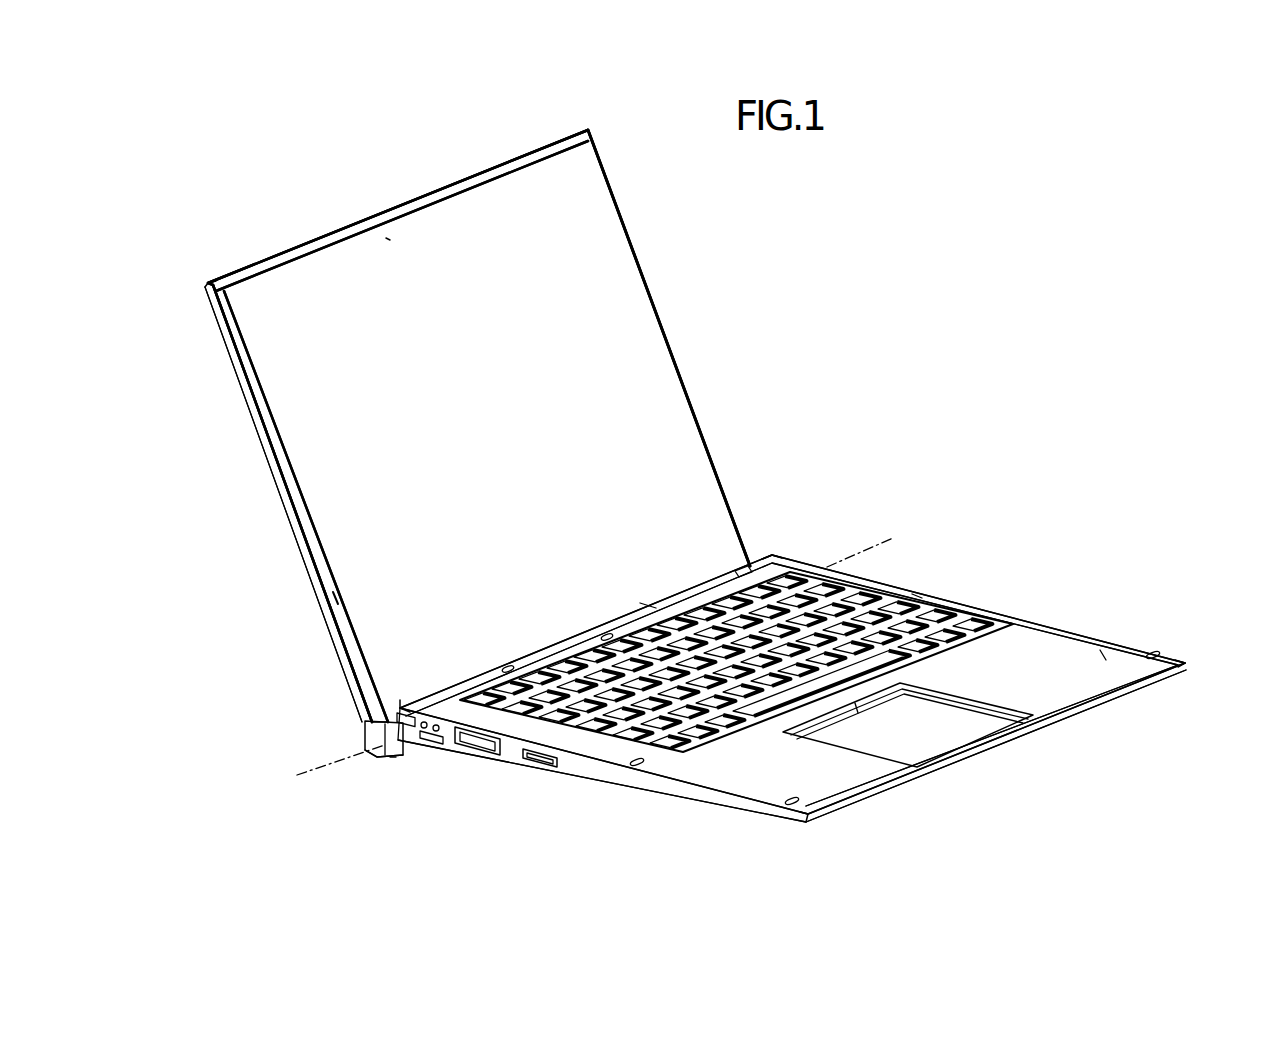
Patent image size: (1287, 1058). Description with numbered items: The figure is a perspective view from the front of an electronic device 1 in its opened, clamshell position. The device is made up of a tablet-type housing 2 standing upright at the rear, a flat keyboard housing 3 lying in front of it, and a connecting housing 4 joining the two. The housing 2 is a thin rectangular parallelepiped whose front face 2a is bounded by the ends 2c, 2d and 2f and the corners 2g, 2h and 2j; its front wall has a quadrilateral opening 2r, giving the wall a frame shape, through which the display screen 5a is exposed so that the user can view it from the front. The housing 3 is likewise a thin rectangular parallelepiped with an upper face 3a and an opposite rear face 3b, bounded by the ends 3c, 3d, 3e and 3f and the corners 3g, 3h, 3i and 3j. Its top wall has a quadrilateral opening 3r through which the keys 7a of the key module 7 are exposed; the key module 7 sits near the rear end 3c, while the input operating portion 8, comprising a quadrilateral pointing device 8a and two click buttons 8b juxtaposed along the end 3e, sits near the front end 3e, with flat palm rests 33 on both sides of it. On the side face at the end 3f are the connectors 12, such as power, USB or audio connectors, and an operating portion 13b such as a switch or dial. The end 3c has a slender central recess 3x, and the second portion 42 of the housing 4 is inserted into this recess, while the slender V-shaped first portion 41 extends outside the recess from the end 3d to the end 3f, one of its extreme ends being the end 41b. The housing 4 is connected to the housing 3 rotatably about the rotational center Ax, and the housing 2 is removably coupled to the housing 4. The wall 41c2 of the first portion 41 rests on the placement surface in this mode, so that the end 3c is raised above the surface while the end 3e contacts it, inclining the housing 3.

The electronic device 1 is at (452, 130).
The housing 2 is at (598, 133).
The face 2a is at (293, 250).
The end 2c is at (522, 128).
The end 2d is at (673, 338).
The end 2f is at (298, 540).
The corner 2g is at (205, 281).
The corner 2h is at (589, 131).
The corner 2j is at (370, 727).
The opening 2r is at (342, 600).
The display screen 5a is at (388, 238).
The housing 3 is at (1180, 658).
The face 3a is at (1087, 685).
The face 3b is at (583, 782).
The end 3c is at (763, 577).
The end 3d is at (973, 608).
The end 3e is at (1060, 717).
The end 3f is at (665, 782).
The corner 3g is at (402, 710).
The corner 3h is at (780, 563).
The corner 3i is at (1188, 666).
The corner 3j is at (808, 826).
The opening 3r is at (917, 597).
The recess 3x is at (733, 573).
The palm rests 33 is at (1103, 655).
The housing 4 is at (393, 760).
The first portion 41 is at (378, 757).
The end 41b is at (430, 737).
The wall 41c2 is at (393, 760).
The second portion 42 is at (648, 607).
The key module 7 is at (818, 597).
The keys 7a is at (1010, 622).
The input operating portion 8 is at (933, 733).
The pointing device 8a is at (970, 728).
The click button 8b is at (880, 700).
The connectors 12 is at (478, 757).
The operating portion 13b is at (420, 730).
The rotational center Ax is at (872, 542).